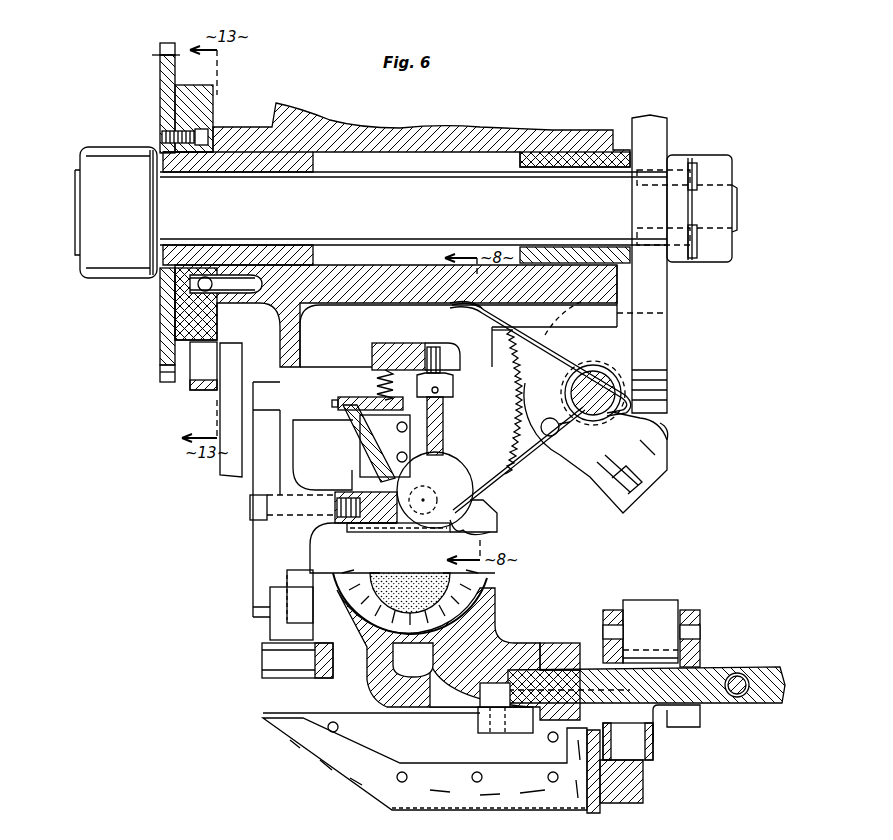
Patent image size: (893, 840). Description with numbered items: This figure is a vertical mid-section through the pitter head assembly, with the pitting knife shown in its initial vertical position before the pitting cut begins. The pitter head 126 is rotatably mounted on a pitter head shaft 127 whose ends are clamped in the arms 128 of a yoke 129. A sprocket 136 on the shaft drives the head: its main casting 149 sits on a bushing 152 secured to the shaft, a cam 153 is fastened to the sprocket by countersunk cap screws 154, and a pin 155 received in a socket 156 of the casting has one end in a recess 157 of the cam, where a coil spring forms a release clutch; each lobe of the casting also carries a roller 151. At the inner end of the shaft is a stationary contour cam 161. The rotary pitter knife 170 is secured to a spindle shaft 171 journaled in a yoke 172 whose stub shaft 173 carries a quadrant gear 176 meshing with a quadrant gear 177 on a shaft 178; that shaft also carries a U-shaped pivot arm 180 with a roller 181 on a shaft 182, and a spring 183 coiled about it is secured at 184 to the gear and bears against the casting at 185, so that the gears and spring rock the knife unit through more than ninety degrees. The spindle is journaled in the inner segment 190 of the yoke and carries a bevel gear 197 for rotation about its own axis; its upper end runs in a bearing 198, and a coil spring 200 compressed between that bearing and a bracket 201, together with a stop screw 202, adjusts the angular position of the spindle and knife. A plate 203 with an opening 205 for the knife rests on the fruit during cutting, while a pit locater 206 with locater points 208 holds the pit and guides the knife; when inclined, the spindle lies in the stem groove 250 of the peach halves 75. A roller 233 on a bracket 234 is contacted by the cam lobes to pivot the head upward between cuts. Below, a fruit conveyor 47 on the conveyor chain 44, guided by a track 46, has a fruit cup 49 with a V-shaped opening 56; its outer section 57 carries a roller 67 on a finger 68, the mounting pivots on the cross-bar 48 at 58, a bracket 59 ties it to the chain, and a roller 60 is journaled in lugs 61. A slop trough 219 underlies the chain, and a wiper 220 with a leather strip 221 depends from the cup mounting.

The pitter head 126 is at (424, 126).
The pitter head shaft 127 is at (455, 178).
The arms 128 is at (707, 155).
The yoke 129 is at (82, 139).
The sprocket 136 is at (160, 97).
The main casting 149 is at (320, 120).
The bushing 152 is at (267, 157).
The cam 153 is at (165, 345).
The countersunk cap screws 154 is at (215, 135).
The pin 155 is at (228, 295).
The socket 156 is at (243, 305).
The recess 157 is at (198, 285).
The stationary contour cam 161 is at (669, 352).
The rotary pitter knife 170 is at (465, 470).
The spindle shaft 171 is at (443, 435).
The yoke 172 is at (370, 445).
The stub shaft 173 is at (425, 497).
The quadrant gear 176 is at (505, 487).
The quadrant gear 177 is at (530, 463).
The shaft 178 is at (575, 390).
The U-shaped pivot arm 180 is at (650, 478).
The roller 181 is at (665, 430).
The shaft 182 is at (655, 440).
The spring 183 is at (490, 322).
The spring attachment 184 is at (541, 427).
The spring bearing point 185 is at (450, 305).
The inner segment 190 is at (390, 343).
The bevel gear 197 is at (455, 380).
The bearing 198 is at (425, 350).
The coil spring 200 is at (380, 372).
The bracket 201 is at (348, 398).
The stop screw 202 is at (340, 412).
The plate 203 is at (352, 535).
The opening 205 is at (380, 528).
The pit locater 206 is at (420, 533).
The locater points 208 is at (487, 532).
The roller 233 is at (200, 390).
The bracket 234 is at (235, 472).
The stem groove 250 is at (495, 580).
The peach halves 75 is at (347, 580).
The fruit conveyor 47 is at (458, 654).
The fruit cup 49 is at (500, 627).
The V-shaped opening 56 is at (395, 660).
The outer section 57 is at (548, 643).
The cross-bar 48 is at (760, 670).
The pivot 58 is at (737, 676).
The bracket 59 is at (698, 710).
The roller 60 is at (648, 605).
The lugs 61 is at (613, 612).
The conveyor chain 44 is at (655, 742).
The track 46 is at (615, 795).
The roller 67 is at (265, 660).
The finger 68 is at (270, 598).
The roller 151 is at (285, 620).
The slop trough 219 is at (318, 760).
The wiper 220 is at (345, 720).
The leather strip 221 is at (432, 795).